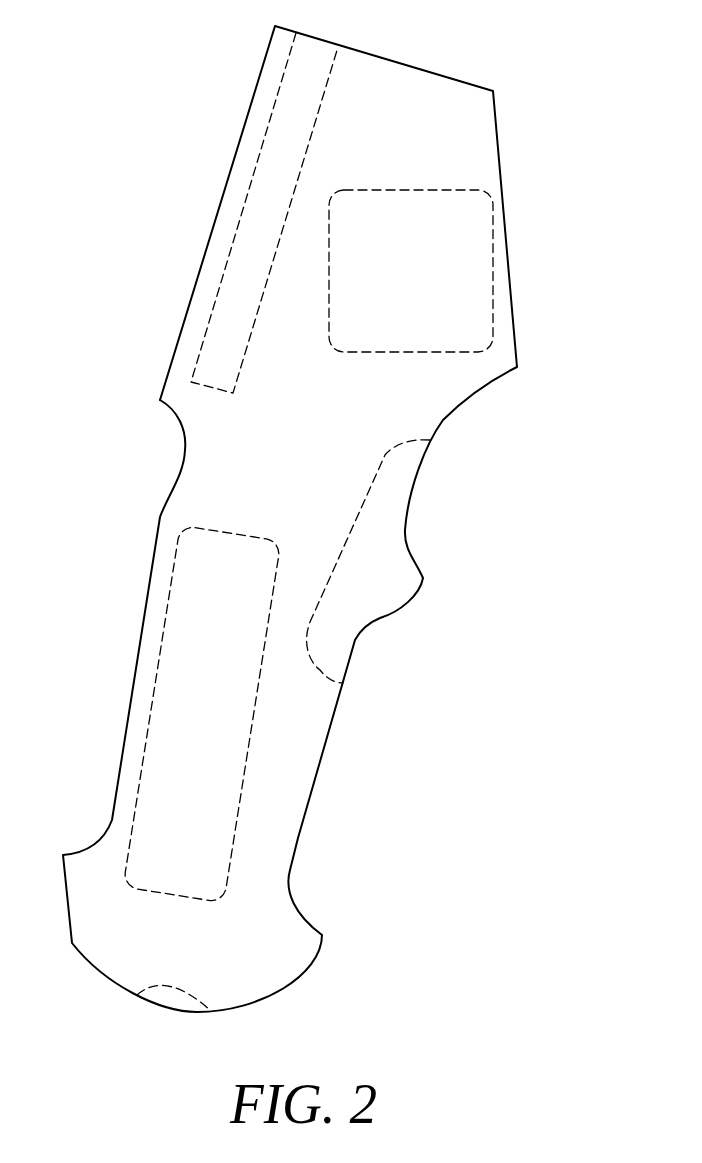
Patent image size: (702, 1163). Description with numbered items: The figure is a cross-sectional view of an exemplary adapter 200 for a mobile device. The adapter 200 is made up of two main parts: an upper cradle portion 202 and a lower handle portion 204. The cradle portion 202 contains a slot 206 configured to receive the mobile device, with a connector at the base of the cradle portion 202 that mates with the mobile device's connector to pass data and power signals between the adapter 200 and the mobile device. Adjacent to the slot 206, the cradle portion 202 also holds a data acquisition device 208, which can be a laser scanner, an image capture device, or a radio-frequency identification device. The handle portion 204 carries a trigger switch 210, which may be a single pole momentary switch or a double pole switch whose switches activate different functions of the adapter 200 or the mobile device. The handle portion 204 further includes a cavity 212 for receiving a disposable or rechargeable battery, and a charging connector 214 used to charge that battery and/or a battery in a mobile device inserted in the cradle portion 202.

The adapter 200 is at (311, 519).
The cradle portion 202 is at (500, 150).
The handle portion 204 is at (128, 710).
The slot 206 is at (323, 98).
The data acquisition device 208 is at (412, 190).
The trigger switch 210 is at (412, 557).
The cavity 212 is at (235, 530).
The charging connector 214 is at (178, 982).